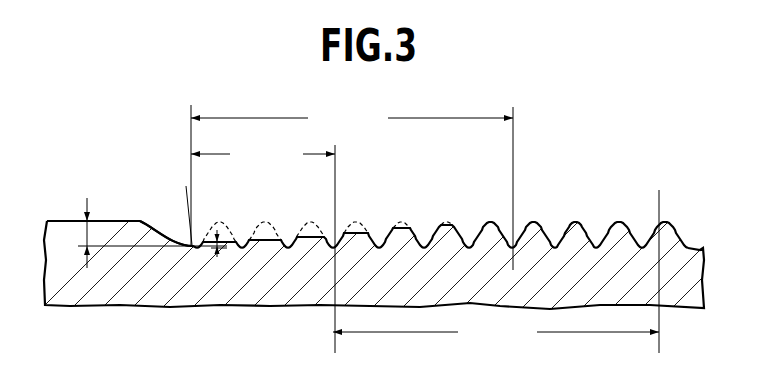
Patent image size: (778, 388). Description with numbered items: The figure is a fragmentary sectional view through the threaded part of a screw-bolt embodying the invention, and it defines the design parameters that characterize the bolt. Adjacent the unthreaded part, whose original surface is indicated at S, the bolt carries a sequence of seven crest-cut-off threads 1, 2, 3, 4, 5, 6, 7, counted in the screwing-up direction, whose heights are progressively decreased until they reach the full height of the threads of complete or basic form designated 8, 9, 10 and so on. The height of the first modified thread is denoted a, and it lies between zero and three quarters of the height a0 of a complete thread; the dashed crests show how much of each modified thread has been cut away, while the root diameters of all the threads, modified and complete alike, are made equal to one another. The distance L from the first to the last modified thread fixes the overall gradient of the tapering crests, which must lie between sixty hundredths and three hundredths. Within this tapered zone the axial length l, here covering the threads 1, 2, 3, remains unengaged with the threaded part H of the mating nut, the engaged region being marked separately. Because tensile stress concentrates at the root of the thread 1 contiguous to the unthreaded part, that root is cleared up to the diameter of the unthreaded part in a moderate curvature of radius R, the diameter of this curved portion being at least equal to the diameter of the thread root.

The original surface of the workpiece S is at (63, 221).
The height of the complete thread a0 is at (94, 239).
The radius of transition arc R is at (167, 233).
The height of crest-cut-off thread a is at (209, 239).
The crest-cut-off thread 1 is at (219, 224).
The crest-cut-off thread 2 is at (265, 224).
The crest-cut-off thread 3 is at (310, 224).
The crest-cut-off thread 4 is at (356, 224).
The crest-cut-off thread 5 is at (401, 224).
The crest-cut-off thread 6 is at (446, 224).
The crest-cut-off thread 7 is at (490, 224).
The thread of complete form 8 is at (533, 224).
The thread of complete form 9 is at (575, 224).
The thread of complete form 10 is at (619, 224).
The distance from the first to the last thread L is at (352, 187).
The axial length of the tapered portion l is at (263, 248).
The threaded part of the mating nut H is at (496, 271).